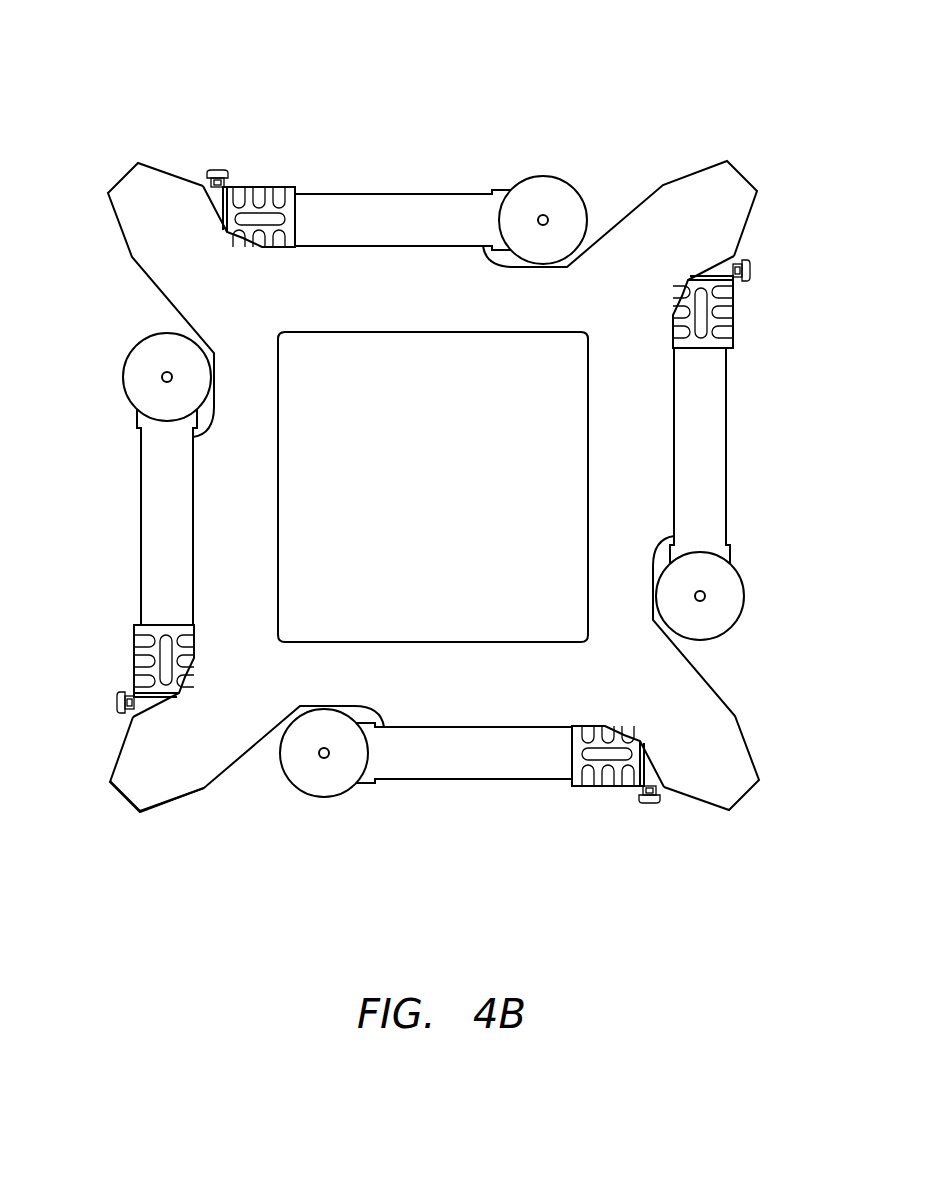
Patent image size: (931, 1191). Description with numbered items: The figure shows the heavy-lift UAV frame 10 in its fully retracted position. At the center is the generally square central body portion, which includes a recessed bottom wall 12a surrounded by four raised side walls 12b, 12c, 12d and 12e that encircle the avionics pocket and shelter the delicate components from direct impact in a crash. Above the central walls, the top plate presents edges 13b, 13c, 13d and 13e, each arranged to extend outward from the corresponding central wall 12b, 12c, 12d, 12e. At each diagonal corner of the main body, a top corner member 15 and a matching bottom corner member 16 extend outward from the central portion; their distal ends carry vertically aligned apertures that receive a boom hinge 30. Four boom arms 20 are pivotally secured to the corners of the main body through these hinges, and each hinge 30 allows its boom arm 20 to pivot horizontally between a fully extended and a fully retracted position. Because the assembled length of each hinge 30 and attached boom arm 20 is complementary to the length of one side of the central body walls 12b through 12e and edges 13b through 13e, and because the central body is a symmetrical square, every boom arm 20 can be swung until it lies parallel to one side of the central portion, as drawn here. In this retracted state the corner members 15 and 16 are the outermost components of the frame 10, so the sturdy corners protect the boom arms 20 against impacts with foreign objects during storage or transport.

The heavy-lift UAV frame 10 is at (221, 96).
The recessed bottom wall 12a is at (433, 487).
The raised side wall 12b is at (415, 337).
The raised side wall 12c is at (581, 445).
The raised side wall 12d is at (450, 636).
The raised side wall 12e is at (289, 516).
The top plate edge 13b is at (400, 296).
The top plate edge 13c is at (653, 487).
The top plate edge 13d is at (471, 708).
The top plate edge 13e is at (253, 455).
The top corner member 15 is at (158, 244).
The bottom corner member 16 is at (153, 816).
The boom arm 20 is at (390, 184).
The boom hinge 30 is at (246, 171).